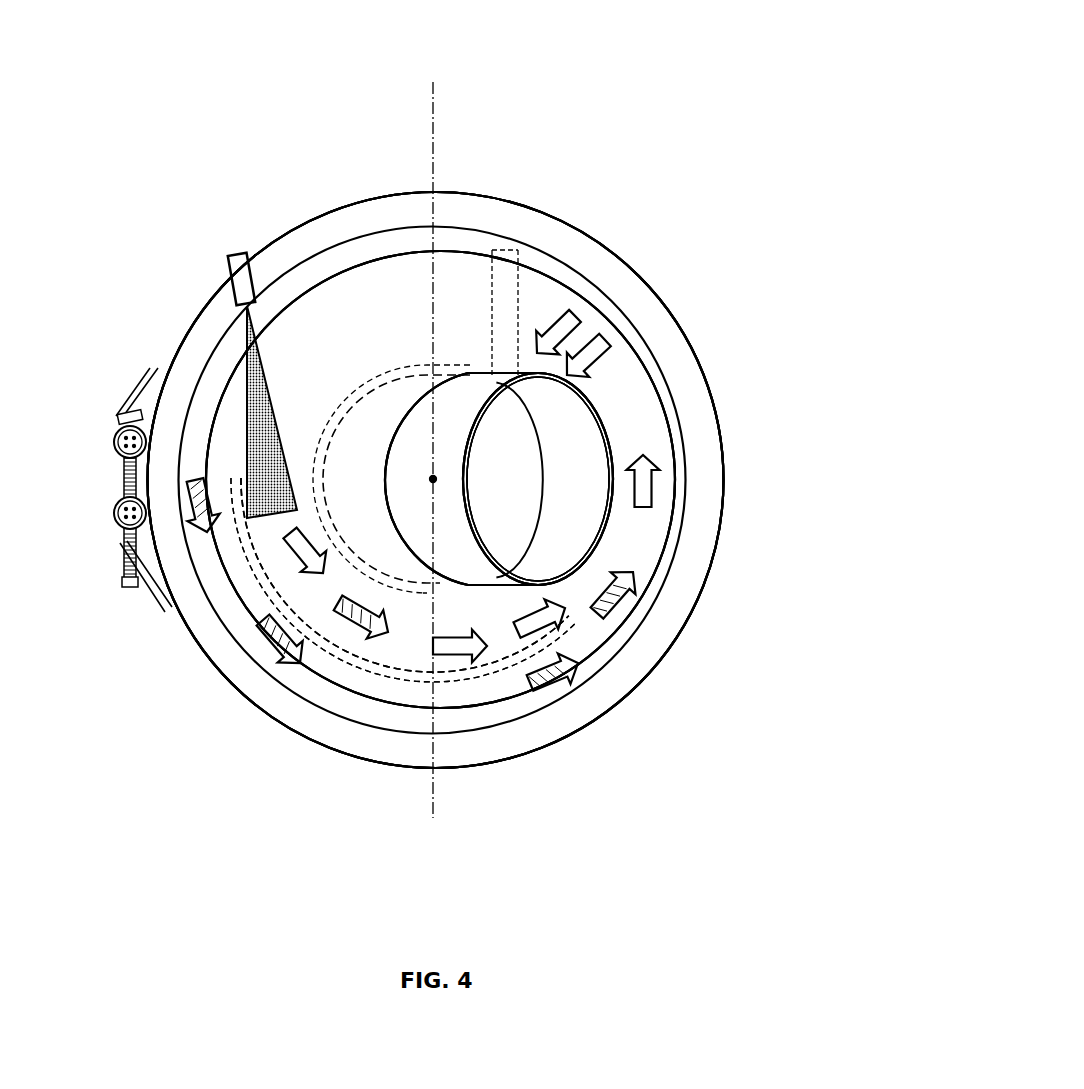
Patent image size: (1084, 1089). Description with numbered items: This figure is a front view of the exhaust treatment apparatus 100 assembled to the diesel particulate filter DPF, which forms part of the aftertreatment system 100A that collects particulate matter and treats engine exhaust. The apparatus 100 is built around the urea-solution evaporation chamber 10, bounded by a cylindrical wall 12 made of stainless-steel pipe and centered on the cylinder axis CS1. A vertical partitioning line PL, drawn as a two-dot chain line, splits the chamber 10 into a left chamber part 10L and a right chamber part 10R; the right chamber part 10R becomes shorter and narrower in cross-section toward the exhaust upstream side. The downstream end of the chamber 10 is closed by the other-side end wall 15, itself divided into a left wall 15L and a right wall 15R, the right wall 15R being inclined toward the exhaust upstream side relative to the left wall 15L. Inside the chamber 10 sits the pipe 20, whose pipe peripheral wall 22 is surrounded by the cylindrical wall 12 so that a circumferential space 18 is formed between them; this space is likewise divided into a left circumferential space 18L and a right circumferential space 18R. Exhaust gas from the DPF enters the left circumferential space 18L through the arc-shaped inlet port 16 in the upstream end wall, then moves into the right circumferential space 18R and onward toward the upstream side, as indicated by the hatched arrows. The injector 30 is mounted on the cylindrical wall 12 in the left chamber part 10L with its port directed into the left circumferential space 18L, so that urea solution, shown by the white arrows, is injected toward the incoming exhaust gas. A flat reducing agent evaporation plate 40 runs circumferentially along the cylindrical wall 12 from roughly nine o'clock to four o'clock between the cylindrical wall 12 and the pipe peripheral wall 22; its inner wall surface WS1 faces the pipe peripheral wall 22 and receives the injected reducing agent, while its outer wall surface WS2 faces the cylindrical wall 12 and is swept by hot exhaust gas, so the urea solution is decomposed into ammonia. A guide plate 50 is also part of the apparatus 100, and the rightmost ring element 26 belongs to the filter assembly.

The aftertreatment system 100A is at (600, 107).
The exhaust treatment apparatus 100 is at (648, 328).
The urea-solution evaporation chamber 10 is at (232, 407).
The left chamber part 10L is at (268, 480).
The right chamber part 10R is at (614, 398).
The cylindrical wall 12 is at (330, 246).
The other-side end wall 15 is at (230, 347).
The left wall 15L is at (280, 469).
The right wall 15R is at (600, 303).
The inlet port 16 is at (325, 315).
The circumferential space 18 is at (278, 565).
The left circumferential space 18L is at (257, 570).
The right circumferential space 18R is at (493, 637).
The pipe 20 is at (610, 438).
The pipe peripheral wall 22 is at (592, 479).
The filter casing 26 is at (608, 513).
The injector 30 is at (242, 254).
The reducing agent evaporation plate 40 is at (510, 663).
The guide plate 50 is at (510, 252).
The cylinder axis CS1 is at (433, 478).
The partitioning line PL is at (438, 142).
The inner wall surface WS1 is at (367, 662).
The outer wall surface WS2 is at (405, 680).
The diesel particulate filter DPF is at (607, 247).